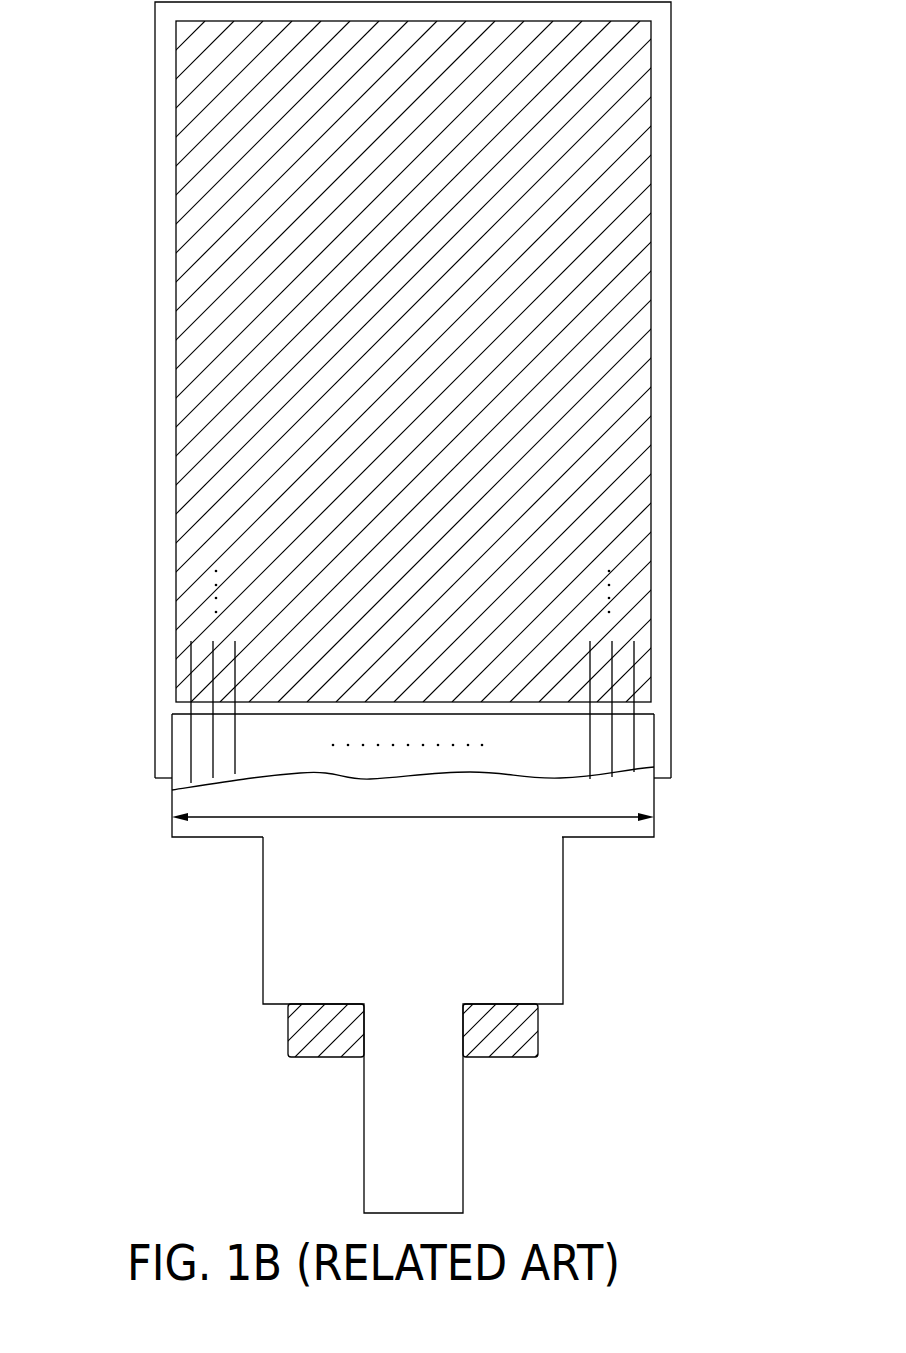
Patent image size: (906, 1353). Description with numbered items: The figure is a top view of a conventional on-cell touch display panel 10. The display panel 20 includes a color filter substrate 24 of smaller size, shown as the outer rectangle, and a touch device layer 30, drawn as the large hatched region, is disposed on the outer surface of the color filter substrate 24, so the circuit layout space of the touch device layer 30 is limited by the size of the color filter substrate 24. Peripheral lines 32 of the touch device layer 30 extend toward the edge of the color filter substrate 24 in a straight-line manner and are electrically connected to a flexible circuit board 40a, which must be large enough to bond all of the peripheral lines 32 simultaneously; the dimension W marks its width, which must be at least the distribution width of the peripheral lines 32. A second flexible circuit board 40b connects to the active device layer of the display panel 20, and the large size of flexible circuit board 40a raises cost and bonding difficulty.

The on-cell touch display panel 10 is at (453, 606).
The display panel 20 is at (464, 390).
The color filter substrate 24 is at (658, 323).
The touch device layer 30 is at (632, 403).
The peripheral lines 32 is at (235, 662).
The flexible circuit board 40a is at (541, 923).
The flexible circuit board 40b is at (527, 1035).